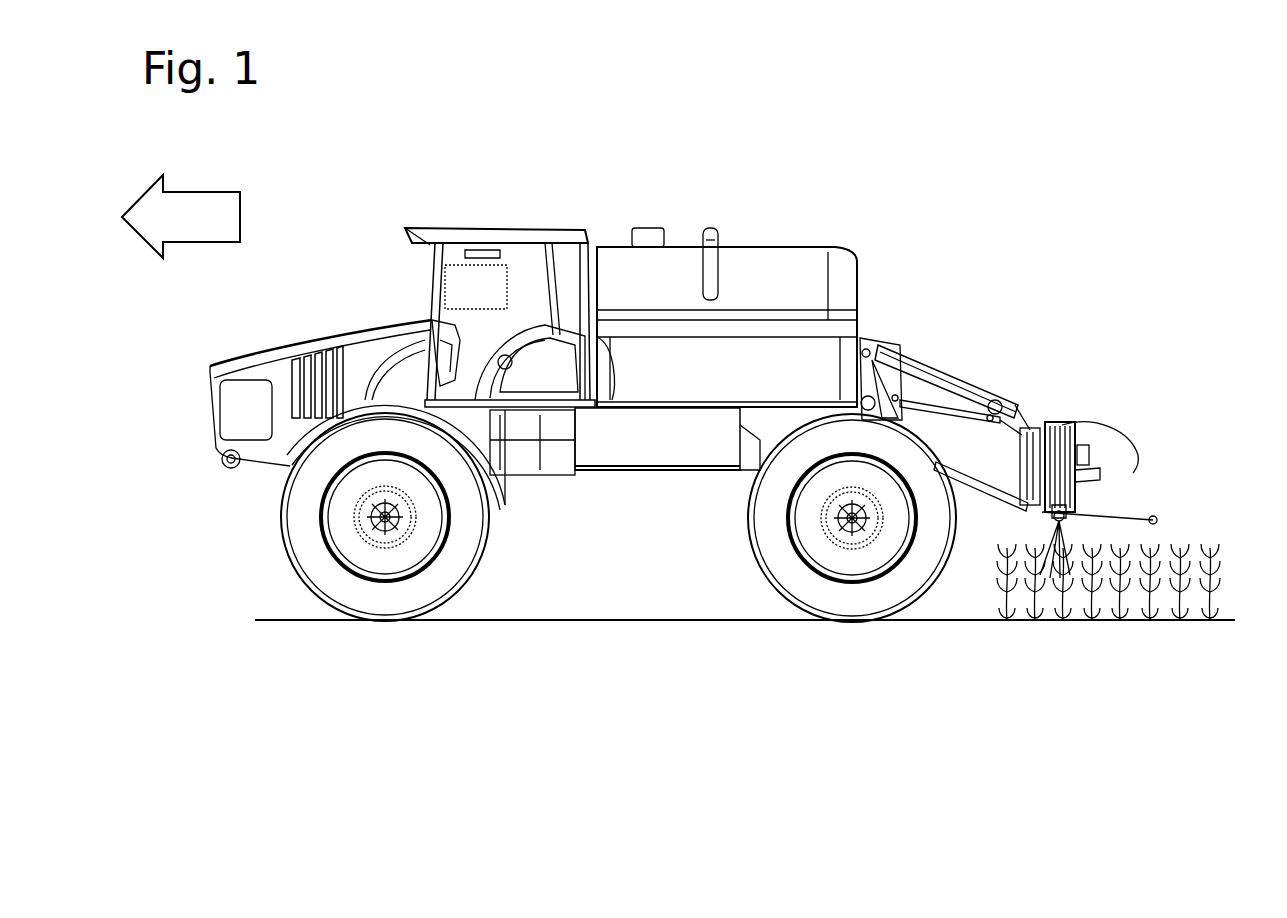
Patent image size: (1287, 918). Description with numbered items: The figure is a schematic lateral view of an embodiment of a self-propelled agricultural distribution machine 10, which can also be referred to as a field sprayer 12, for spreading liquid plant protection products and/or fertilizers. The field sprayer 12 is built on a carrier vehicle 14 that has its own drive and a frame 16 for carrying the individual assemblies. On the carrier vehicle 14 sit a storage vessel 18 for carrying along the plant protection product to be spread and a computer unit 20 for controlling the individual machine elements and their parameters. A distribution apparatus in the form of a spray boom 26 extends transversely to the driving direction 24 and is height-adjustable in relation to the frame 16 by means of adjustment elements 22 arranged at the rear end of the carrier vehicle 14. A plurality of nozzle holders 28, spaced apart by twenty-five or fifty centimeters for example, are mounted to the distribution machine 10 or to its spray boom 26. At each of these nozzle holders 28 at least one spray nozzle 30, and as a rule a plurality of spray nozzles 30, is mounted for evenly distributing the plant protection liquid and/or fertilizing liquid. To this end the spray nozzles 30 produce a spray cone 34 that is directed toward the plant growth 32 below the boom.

The self-propelled agricultural distribution machine 10 is at (915, 168).
The field sprayer 12 is at (715, 425).
The carrier vehicle 14 is at (321, 328).
The frame 16 is at (645, 472).
The storage vessel 18 is at (676, 299).
The computer unit 20 is at (488, 310).
The adjustment elements 22 is at (918, 398).
The driving direction 24 is at (181, 216).
The spray boom 26 is at (1113, 433).
The nozzle holders 28 is at (1050, 521).
The spray nozzles 30 is at (1059, 513).
The plant growth 32 is at (1191, 569).
The spray cone 34 is at (1064, 542).